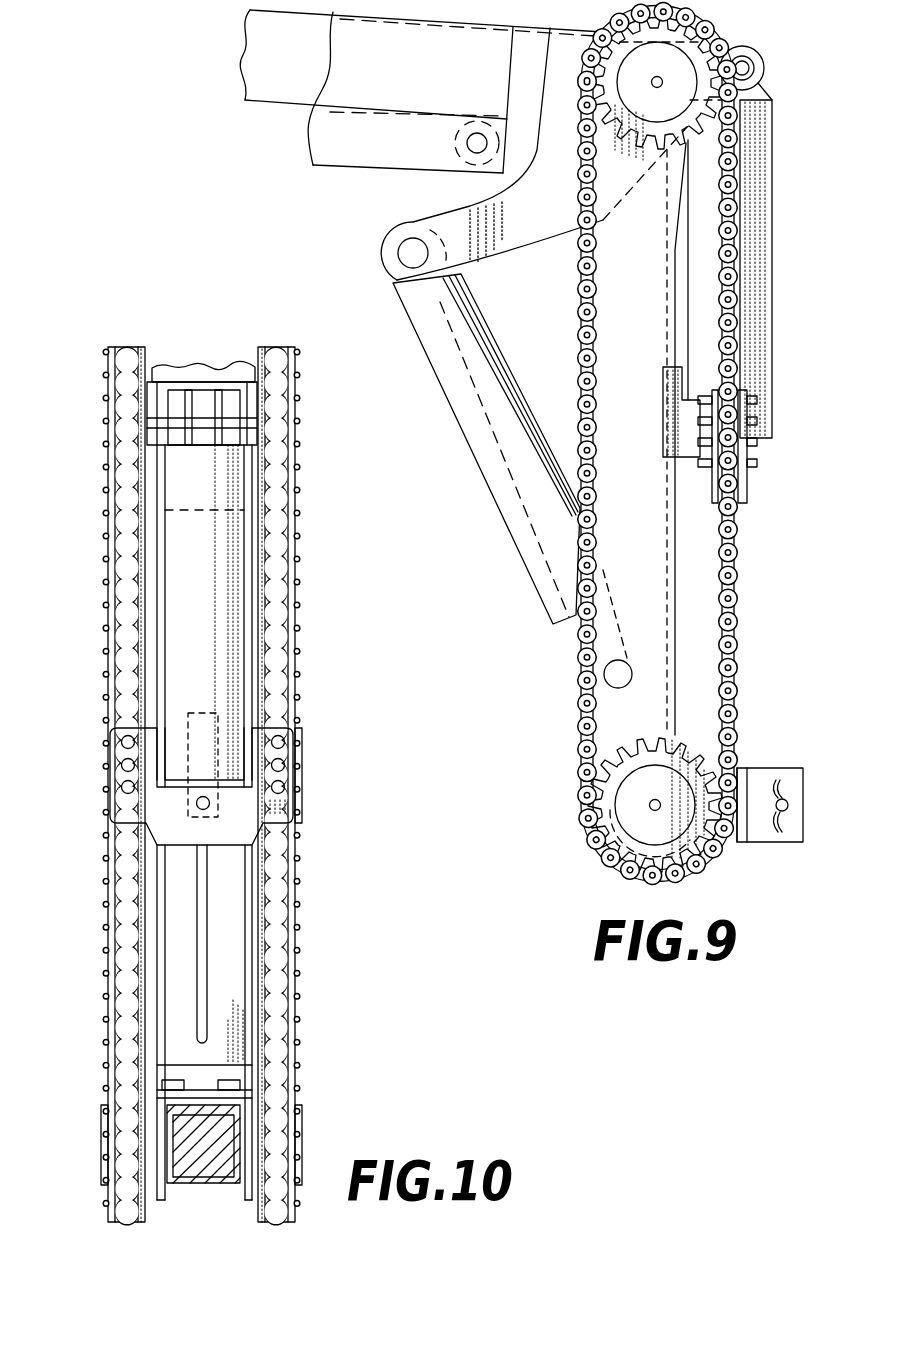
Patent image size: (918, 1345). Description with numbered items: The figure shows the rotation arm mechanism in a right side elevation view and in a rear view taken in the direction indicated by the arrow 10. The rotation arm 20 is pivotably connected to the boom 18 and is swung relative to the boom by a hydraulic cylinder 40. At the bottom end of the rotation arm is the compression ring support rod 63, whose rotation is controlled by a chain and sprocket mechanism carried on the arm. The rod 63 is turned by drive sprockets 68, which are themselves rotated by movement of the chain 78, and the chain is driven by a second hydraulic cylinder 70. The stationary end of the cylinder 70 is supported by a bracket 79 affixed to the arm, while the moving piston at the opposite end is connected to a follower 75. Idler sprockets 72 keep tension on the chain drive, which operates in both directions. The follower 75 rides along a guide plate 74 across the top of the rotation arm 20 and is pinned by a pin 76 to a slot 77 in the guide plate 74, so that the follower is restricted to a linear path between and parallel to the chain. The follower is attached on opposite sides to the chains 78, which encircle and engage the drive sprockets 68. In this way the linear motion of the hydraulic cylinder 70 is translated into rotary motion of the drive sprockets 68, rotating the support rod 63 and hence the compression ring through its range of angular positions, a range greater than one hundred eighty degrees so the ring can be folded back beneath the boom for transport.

In FIG. 9, the section view direction indicator 10 is at (715, 898).
In FIG. 9, the boom 18 is at (413, 74).
In FIG. 9, the rotation arm 20 is at (646, 318).
In FIG. 10, the rotation arm 20 is at (90, 912).
In FIG. 9, the hydraulic cylinder 40 is at (485, 460).
In FIG. 9, the compression ring support rod 63 is at (747, 767).
In FIG. 10, the compression ring support rod 63 is at (197, 1185).
In FIG. 9, the drive sprockets 68 is at (600, 808).
In FIG. 10, the drive sprockets 68 is at (103, 1105).
In FIG. 9, the hydraulic cylinder 70 is at (766, 278).
In FIG. 10, the hydraulic cylinder 70 is at (200, 592).
In FIG. 9, the idler sprockets 72 is at (705, 45).
In FIG. 10, the idler sprockets 72 is at (108, 372).
In FIG. 10, the guide plate 74 is at (230, 912).
In FIG. 9, the follower 75 is at (748, 488).
In FIG. 10, the follower 75 is at (253, 807).
In FIG. 10, the pin 76 is at (200, 800).
In FIG. 10, the slot 77 is at (207, 1023).
In FIG. 9, the chain 78 is at (738, 598).
In FIG. 9, the bracket 79 is at (757, 65).
In FIG. 10, the bracket 79 is at (205, 364).